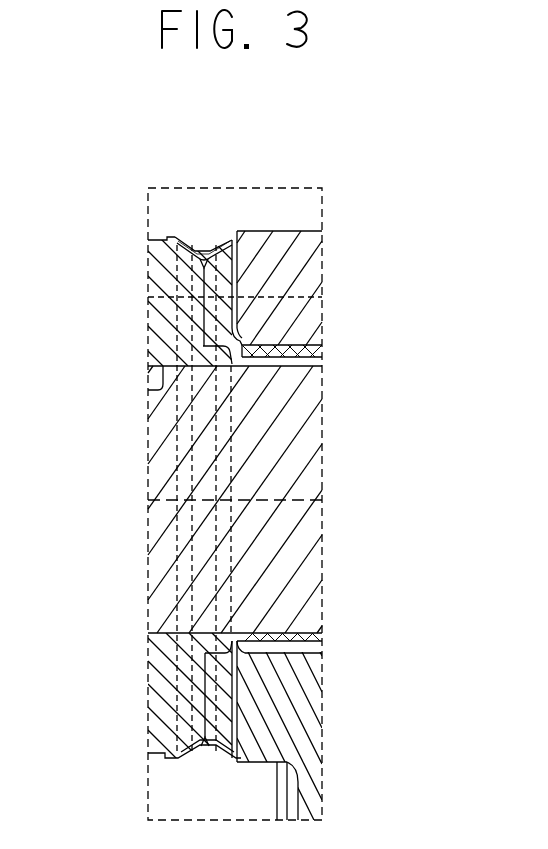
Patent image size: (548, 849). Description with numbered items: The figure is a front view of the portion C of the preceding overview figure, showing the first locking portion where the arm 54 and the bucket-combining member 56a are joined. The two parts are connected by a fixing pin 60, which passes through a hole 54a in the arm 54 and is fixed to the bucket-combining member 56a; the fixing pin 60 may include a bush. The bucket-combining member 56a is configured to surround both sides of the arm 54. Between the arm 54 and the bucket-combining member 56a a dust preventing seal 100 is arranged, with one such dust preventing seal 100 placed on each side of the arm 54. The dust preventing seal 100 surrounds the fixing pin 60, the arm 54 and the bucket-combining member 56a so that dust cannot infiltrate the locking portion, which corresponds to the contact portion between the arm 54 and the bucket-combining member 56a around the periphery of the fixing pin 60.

The dust preventing seal 100 is at (207, 232).
The portion C is at (322, 212).
The bucket-combining member 56a is at (312, 270).
The arm 54 is at (157, 283).
The hole 54a is at (152, 388).
The fixing pin 60 is at (312, 437).